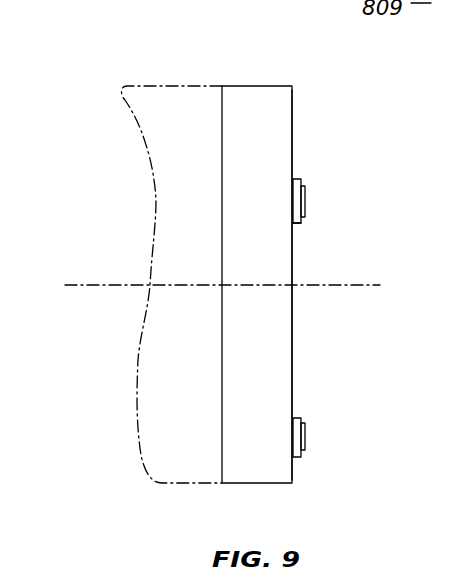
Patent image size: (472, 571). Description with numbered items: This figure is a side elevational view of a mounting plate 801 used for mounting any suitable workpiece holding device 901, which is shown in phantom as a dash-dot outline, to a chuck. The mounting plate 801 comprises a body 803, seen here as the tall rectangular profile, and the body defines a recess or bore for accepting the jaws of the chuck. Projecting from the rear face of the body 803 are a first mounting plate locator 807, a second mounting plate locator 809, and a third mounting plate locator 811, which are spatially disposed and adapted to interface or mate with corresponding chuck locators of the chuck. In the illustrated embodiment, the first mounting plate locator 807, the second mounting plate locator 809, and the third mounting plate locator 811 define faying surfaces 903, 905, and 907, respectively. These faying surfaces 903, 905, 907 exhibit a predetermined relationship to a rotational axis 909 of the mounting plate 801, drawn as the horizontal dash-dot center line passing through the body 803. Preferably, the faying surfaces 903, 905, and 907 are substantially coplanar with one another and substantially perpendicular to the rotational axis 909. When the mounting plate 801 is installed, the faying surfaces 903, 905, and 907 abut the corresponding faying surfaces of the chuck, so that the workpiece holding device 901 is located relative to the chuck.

The mounting plate 801 is at (260, 84).
The body 803 is at (292, 122).
The first mounting plate locator 807 is at (305, 193).
The second mounting plate locator 809 is at (305, 430).
The third mounting plate locator 811 is at (305, 210).
The workpiece holding device 901 is at (142, 138).
The faying surface 903 is at (305, 182).
The faying surface 905 is at (303, 457).
The faying surface 907 is at (305, 223).
The rotational axis 909 is at (322, 285).